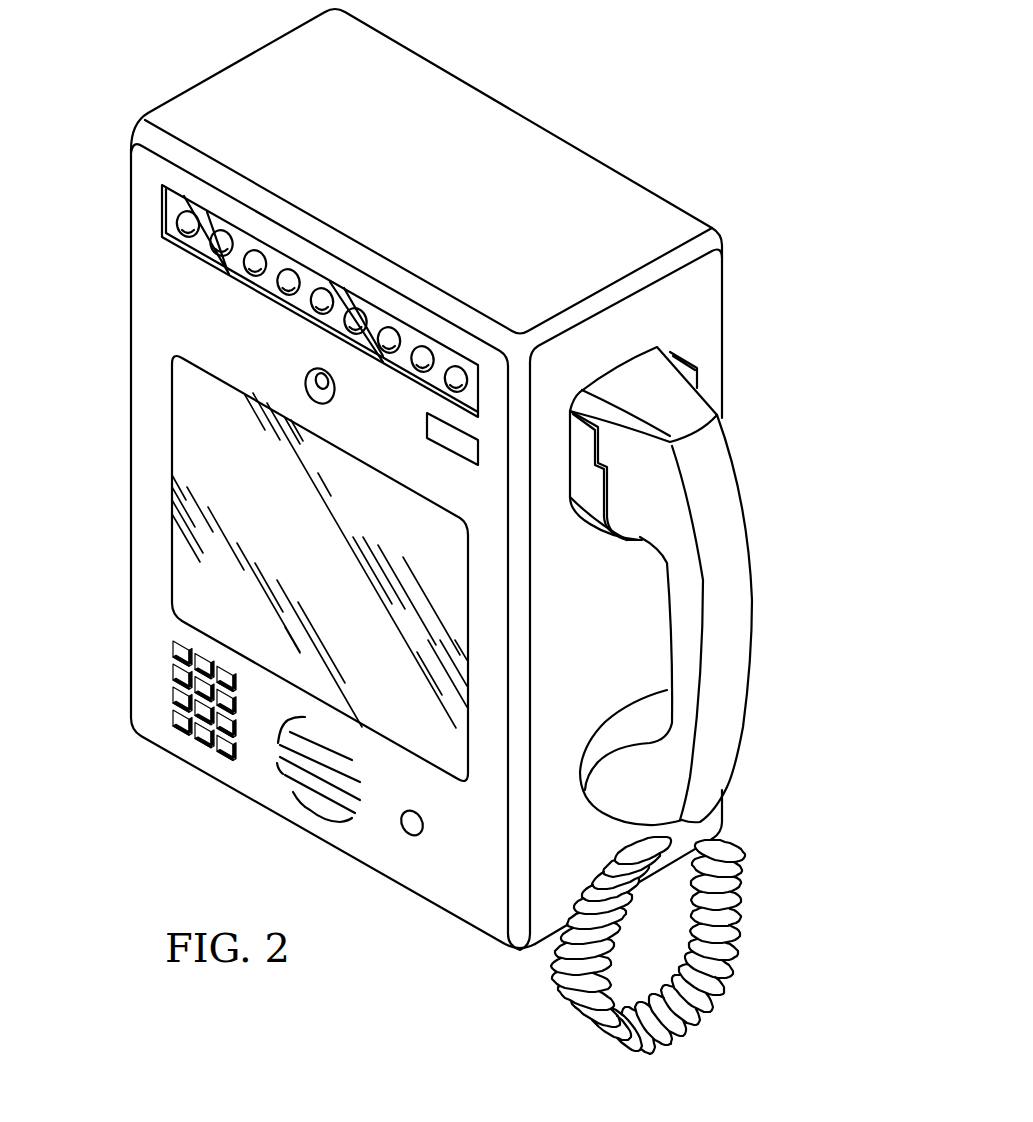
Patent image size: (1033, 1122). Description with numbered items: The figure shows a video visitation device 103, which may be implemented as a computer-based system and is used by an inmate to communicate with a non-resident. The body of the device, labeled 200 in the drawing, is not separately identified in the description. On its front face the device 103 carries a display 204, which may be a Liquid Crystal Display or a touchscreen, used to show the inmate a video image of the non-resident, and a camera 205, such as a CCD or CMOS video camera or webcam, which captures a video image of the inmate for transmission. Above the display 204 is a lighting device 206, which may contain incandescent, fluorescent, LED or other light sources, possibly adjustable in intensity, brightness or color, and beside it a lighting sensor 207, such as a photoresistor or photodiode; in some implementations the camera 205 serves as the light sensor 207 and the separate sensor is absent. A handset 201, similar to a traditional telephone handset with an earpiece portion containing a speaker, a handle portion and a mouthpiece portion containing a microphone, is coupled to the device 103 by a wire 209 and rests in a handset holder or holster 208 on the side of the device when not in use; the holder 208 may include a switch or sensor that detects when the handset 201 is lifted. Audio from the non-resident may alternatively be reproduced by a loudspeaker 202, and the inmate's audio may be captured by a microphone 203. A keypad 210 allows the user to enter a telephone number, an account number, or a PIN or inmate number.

The video visitation device 103 is at (614, 84).
The housing 200 is at (131, 425).
The handset 201 is at (752, 627).
The loudspeaker 202 is at (283, 753).
The microphone 203 is at (404, 834).
The display 204 is at (187, 578).
The camera 205 is at (310, 375).
The lighting device 206 is at (162, 210).
The lighting sensor 207 is at (437, 444).
The handset holder 208 is at (605, 537).
The wire 209 is at (737, 927).
The keypad 210 is at (175, 718).